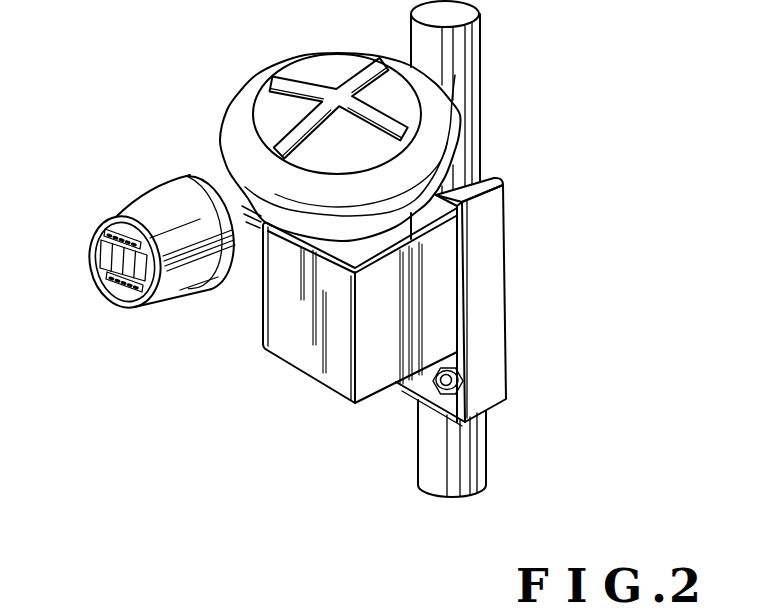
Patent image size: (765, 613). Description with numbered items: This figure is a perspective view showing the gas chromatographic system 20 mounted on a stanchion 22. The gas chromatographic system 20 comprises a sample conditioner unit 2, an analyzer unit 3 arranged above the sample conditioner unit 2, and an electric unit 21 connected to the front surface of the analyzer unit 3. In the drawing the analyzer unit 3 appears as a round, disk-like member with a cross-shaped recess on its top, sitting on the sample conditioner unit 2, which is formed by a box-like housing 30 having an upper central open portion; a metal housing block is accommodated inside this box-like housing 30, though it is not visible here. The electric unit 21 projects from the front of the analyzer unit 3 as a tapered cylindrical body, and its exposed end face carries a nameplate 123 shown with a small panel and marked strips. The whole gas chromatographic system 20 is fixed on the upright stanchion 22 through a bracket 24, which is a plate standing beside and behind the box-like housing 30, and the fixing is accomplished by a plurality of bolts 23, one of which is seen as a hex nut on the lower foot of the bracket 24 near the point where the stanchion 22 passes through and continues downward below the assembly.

The sample conditioner unit 2 is at (442, 333).
The analyzer unit 3 is at (437, 135).
The gas chromatographic system 20 is at (224, 52).
The electric unit 21 is at (176, 315).
The stanchion 22 is at (432, 450).
The bolts 23 is at (416, 386).
The bracket 24 is at (495, 257).
The box-like housing 30 is at (293, 345).
The nameplate 123 is at (124, 240).